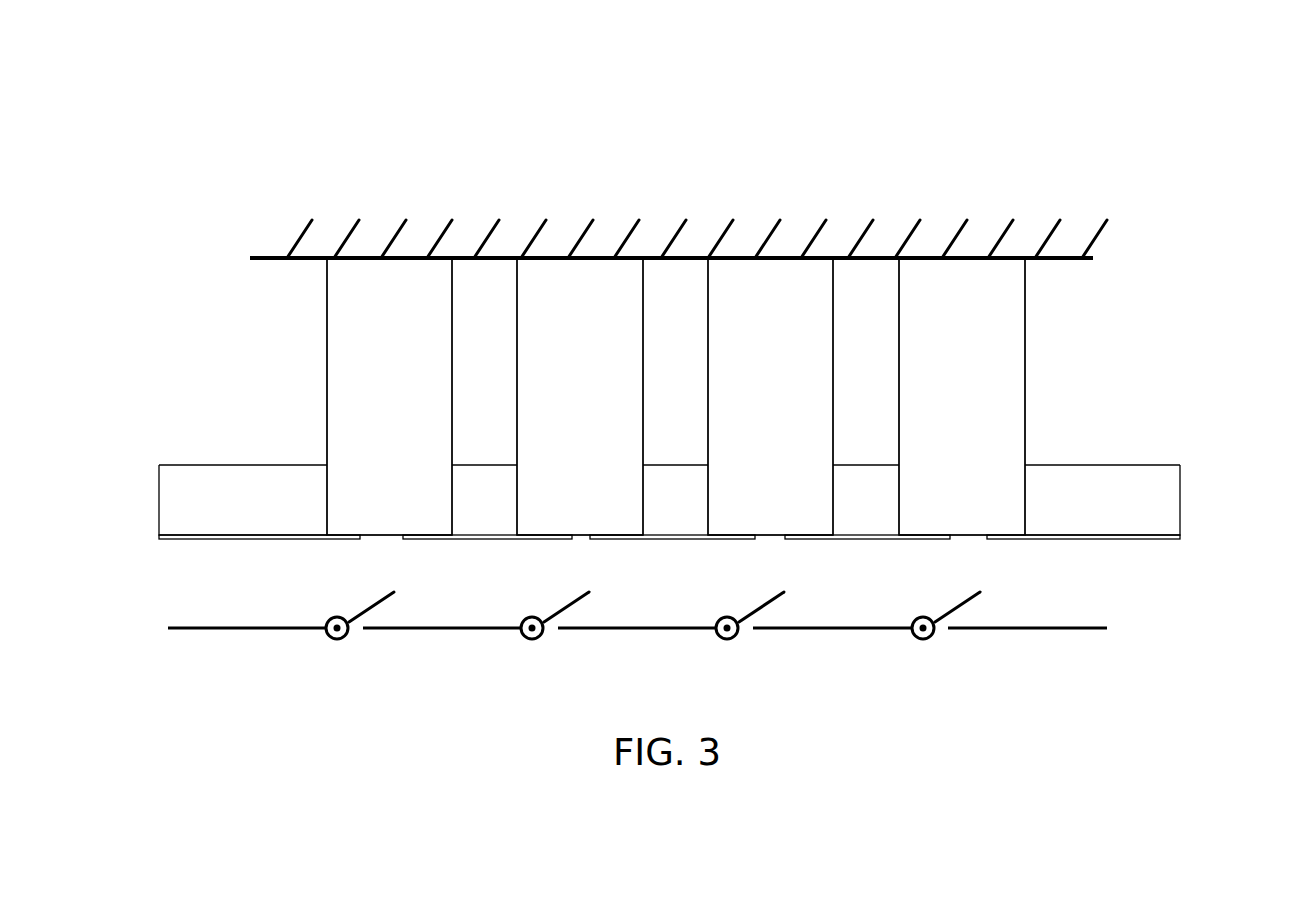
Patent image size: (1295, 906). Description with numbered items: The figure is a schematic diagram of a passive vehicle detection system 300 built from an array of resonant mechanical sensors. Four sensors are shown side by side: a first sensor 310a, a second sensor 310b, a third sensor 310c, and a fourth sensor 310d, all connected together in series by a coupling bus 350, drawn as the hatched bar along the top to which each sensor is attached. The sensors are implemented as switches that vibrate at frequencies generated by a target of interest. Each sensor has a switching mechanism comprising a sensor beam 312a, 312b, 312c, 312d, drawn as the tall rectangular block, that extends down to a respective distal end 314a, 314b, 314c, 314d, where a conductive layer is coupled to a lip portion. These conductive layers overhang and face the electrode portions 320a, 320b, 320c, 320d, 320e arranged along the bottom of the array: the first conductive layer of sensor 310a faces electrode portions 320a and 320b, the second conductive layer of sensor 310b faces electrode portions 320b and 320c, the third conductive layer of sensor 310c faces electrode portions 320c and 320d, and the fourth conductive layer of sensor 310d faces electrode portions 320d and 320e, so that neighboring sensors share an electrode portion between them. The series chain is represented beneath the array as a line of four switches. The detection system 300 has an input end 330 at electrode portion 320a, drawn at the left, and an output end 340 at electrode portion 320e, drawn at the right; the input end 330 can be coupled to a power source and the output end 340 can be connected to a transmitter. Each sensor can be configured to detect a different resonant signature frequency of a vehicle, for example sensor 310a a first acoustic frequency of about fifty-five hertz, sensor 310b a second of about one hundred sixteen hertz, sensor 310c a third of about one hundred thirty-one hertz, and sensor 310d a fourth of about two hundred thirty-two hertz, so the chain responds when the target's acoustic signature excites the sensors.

The passive vehicle detection system 300 is at (1012, 110).
The coupling bus 350 is at (268, 256).
The first sensor 310a is at (318, 337).
The second sensor 310b is at (510, 329).
The third sensor 310c is at (700, 329).
The fourth sensor 310d is at (1035, 337).
The sensor beam 312a is at (425, 397).
The sensor beam 312b is at (615, 397).
The sensor beam 312c is at (805, 397).
The sensor beam 312d is at (998, 397).
The distal end 314a is at (385, 539).
The distal end 314b is at (582, 539).
The distal end 314c is at (773, 539).
The distal end 314d is at (971, 539).
The electrode portion 320a is at (258, 493).
The electrode portion 320b is at (482, 522).
The electrode portion 320c is at (678, 522).
The electrode portion 320d is at (863, 522).
The electrode portion 320e is at (1105, 477).
The input end 330 is at (159, 503).
The output end 340 is at (1182, 503).